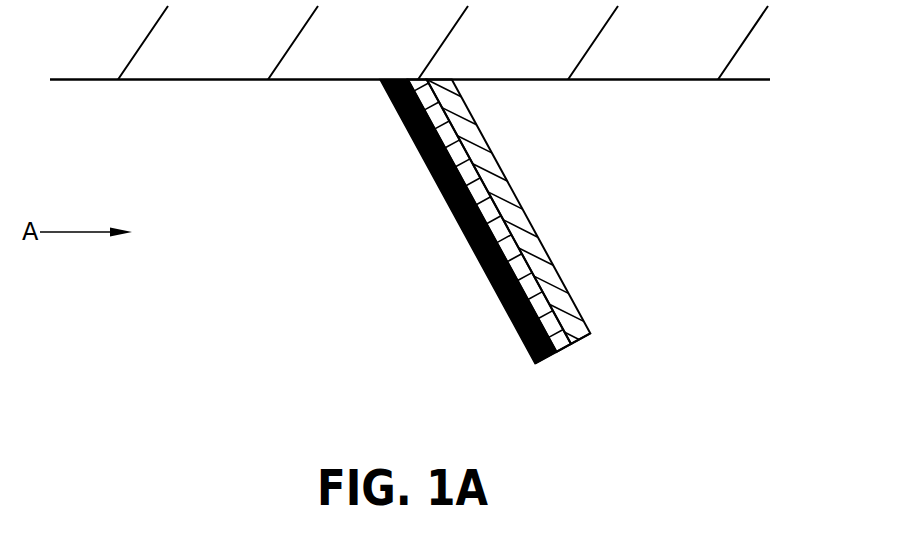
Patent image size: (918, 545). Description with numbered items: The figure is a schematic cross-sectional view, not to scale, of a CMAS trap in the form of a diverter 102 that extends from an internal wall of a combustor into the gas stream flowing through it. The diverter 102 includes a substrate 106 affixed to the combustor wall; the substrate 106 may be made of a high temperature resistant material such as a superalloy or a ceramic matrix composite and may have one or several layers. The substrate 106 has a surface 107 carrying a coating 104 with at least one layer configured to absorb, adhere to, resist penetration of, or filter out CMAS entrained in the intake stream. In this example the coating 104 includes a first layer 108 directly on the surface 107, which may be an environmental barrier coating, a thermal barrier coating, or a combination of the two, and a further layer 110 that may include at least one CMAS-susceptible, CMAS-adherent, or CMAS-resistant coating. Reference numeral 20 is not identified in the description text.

The mounting surface 20 is at (178, 80).
The diverter 102 is at (497, 247).
The coating 104 is at (510, 247).
The substrate 106 is at (552, 263).
The surface 107 is at (568, 340).
The first layer 108 is at (465, 177).
The layer 110 is at (418, 149).